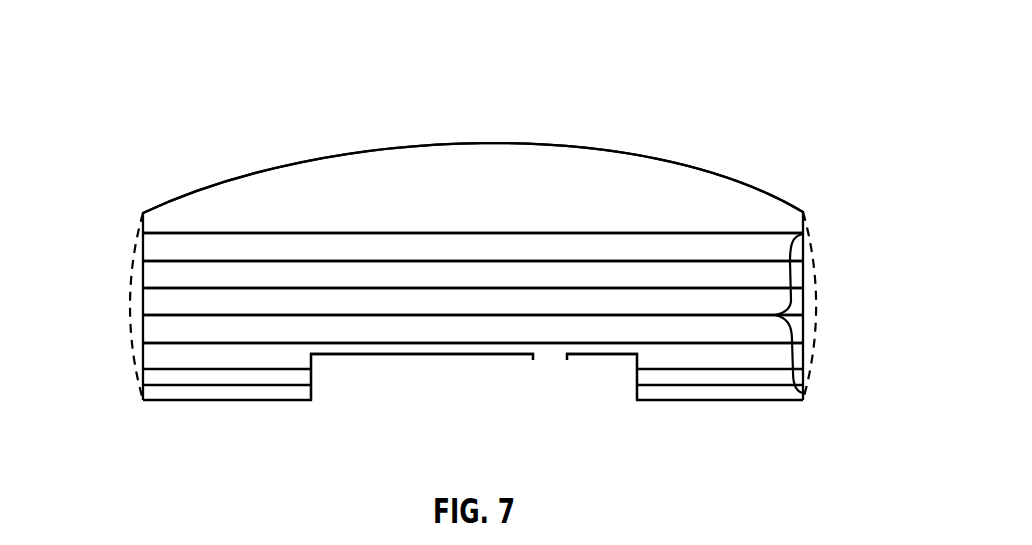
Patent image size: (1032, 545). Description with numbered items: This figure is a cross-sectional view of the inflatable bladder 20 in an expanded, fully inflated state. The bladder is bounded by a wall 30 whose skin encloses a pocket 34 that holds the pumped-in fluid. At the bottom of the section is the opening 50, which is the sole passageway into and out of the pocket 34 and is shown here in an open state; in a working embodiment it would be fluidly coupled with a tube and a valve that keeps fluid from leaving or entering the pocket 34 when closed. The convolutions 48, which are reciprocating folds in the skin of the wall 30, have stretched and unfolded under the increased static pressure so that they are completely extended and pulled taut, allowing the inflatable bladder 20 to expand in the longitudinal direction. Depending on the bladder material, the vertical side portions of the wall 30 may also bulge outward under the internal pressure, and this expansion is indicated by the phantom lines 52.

The inflatable bladder 20 is at (133, 74).
The wall 30 is at (143, 270).
The pocket 34 is at (375, 175).
The convolutions 48 is at (775, 315).
The opening 50 is at (550, 355).
The phantom lines 52 is at (128, 299).